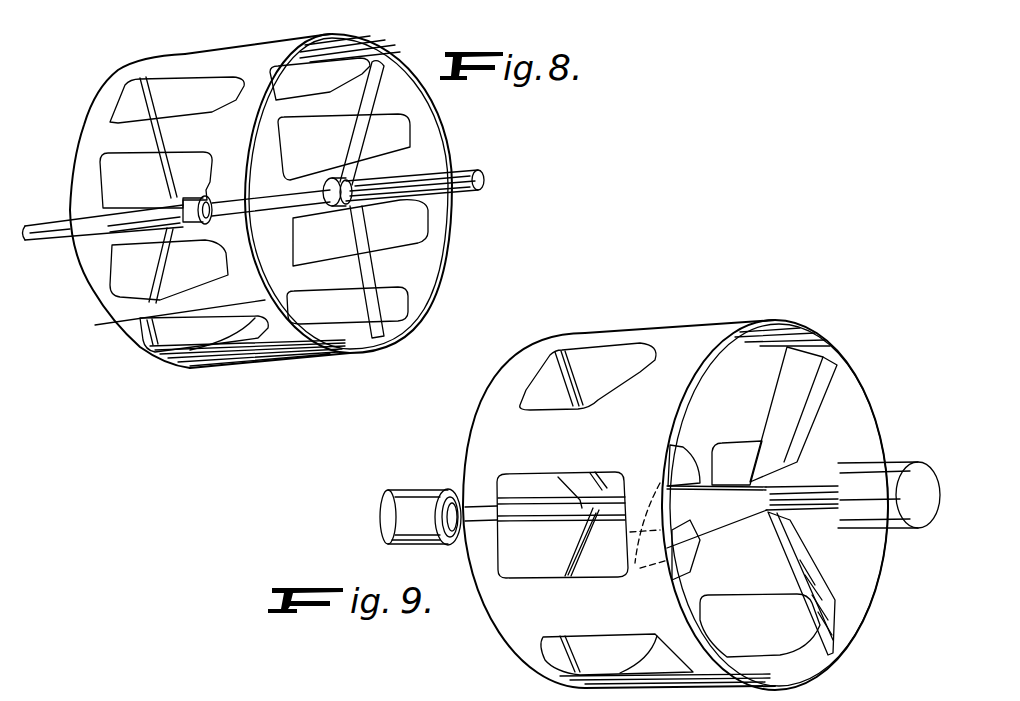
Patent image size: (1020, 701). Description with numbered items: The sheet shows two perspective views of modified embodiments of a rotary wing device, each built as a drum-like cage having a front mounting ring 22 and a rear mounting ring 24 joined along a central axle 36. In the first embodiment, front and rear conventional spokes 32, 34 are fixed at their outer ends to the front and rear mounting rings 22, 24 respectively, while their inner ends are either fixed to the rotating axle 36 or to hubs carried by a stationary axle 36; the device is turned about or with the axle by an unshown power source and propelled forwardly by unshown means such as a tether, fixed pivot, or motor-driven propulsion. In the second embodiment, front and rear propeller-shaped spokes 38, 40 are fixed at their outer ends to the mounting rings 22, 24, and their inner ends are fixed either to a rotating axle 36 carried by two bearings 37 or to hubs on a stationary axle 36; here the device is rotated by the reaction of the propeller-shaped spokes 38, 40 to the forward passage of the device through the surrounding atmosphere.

In FIG. 8, the front mounting ring 22 is at (248, 97).
In FIG. 9, the front mounting ring 22 is at (677, 380).
In FIG. 8, the rear mounting ring 24 is at (97, 278).
In FIG. 9, the rear mounting ring 24 is at (528, 370).
In FIG. 8, the front conventional spokes 32 is at (374, 92).
In FIG. 8, the rear conventional spokes 34 is at (162, 183).
In FIG. 8, the axle 36 is at (468, 171).
In FIG. 9, the axle 36 is at (808, 498).
In FIG. 9, the bearings 37 is at (403, 506).
In FIG. 9, the front propeller-shaped spokes 38 is at (718, 513).
In FIG. 9, the rear propeller-shaped spokes 40 is at (580, 560).